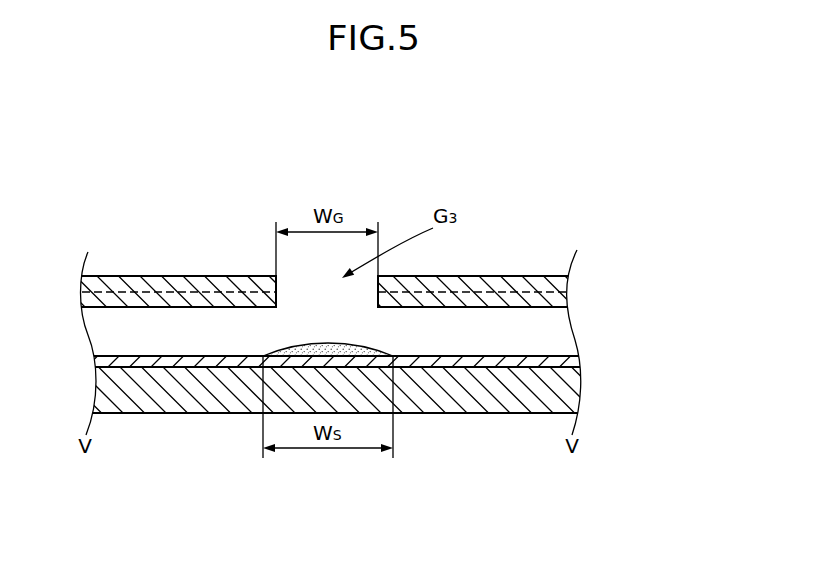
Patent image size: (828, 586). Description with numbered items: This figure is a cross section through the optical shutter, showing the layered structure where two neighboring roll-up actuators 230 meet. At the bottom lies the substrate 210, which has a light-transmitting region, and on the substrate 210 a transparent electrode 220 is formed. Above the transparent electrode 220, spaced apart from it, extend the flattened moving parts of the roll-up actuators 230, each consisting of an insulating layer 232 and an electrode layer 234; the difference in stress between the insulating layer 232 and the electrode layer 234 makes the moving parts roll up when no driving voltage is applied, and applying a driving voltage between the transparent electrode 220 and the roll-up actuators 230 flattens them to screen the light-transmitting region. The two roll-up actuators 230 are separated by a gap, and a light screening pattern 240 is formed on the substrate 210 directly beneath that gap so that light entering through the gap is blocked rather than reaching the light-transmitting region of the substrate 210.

The substrate 210 is at (160, 413).
The transparent electrode 220 is at (568, 360).
The roll-up actuator 230 is at (325, 230).
The insulating layer 232 is at (193, 298).
The electrode layer 234 is at (135, 283).
The light screening pattern 240 is at (386, 352).